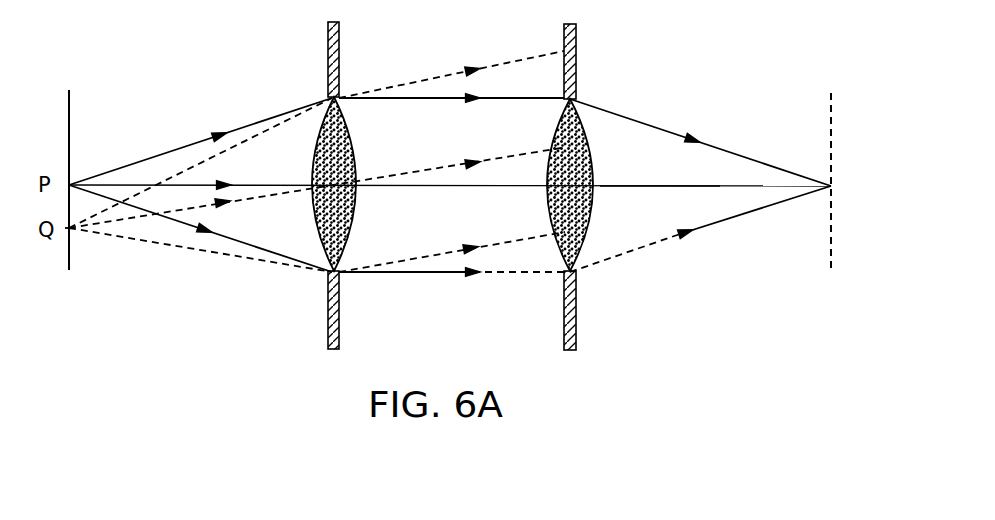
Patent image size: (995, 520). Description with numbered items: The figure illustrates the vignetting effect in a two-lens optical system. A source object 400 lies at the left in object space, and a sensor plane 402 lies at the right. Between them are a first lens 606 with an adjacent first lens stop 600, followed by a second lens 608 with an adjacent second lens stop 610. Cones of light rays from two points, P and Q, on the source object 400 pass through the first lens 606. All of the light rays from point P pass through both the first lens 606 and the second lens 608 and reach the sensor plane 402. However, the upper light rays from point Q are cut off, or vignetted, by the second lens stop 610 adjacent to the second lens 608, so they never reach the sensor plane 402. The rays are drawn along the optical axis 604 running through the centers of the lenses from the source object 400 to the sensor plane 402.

The source object 400 is at (69, 112).
The sensor plane 402 is at (829, 96).
The first lens stop 600 is at (340, 34).
The optical axis 604 is at (661, 189).
The first lens 606 is at (355, 147).
The second lens 608 is at (591, 165).
The second lens stop 610 is at (577, 35).